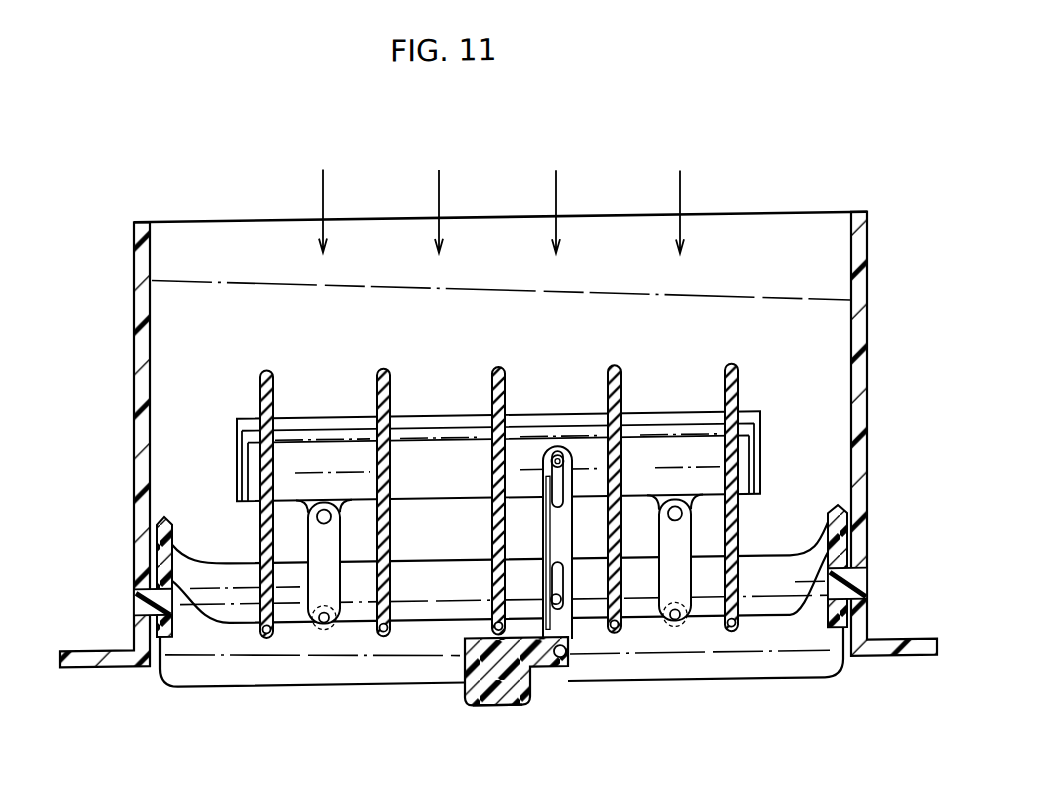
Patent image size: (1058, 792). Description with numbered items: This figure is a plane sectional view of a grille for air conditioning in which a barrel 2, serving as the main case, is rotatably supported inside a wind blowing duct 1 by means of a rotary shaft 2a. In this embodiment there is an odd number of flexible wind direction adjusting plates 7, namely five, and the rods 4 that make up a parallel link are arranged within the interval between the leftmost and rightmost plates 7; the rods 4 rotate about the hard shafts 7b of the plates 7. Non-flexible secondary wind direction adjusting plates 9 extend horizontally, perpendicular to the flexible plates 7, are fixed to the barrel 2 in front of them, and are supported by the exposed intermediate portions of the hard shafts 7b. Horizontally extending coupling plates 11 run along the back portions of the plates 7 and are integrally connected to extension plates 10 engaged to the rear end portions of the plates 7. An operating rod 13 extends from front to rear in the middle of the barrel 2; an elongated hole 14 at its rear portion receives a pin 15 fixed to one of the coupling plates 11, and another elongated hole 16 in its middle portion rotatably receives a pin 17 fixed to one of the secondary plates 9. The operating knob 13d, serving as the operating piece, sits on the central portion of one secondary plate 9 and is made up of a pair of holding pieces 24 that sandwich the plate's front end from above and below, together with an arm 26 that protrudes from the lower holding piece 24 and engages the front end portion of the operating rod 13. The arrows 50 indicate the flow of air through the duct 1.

The wind blowing duct 1 is at (134, 343).
The barrel 2 is at (158, 545).
The rotary shaft 2a is at (134, 598).
The rods 4 is at (312, 543).
The flexible wind direction adjusting plates 7 is at (260, 549).
The hard shafts 7b is at (495, 622).
The secondary wind direction adjusting plates 9 is at (655, 682).
The extension plates 10 is at (273, 369).
The coupling plates 11 is at (758, 462).
The operating rod 13 is at (548, 528).
The operating knob 13d is at (510, 705).
The elongated hole 14 is at (566, 457).
The pin 15 is at (555, 455).
The elongated hole 16 is at (566, 566).
The pin 17 is at (554, 574).
The holding pieces 24 is at (465, 665).
The arm 26 is at (560, 667).
The flow arrows 50 is at (323, 187).